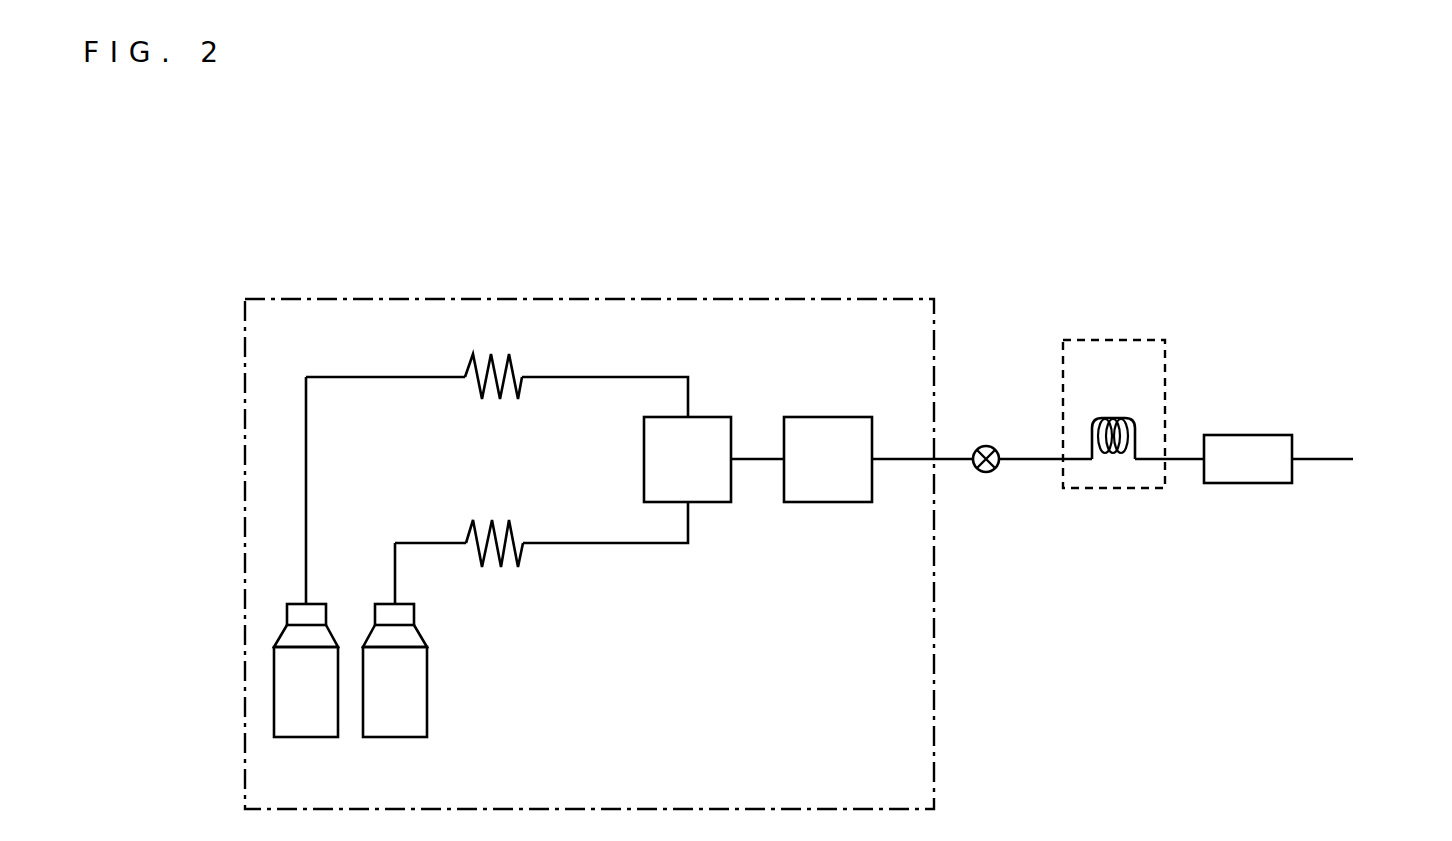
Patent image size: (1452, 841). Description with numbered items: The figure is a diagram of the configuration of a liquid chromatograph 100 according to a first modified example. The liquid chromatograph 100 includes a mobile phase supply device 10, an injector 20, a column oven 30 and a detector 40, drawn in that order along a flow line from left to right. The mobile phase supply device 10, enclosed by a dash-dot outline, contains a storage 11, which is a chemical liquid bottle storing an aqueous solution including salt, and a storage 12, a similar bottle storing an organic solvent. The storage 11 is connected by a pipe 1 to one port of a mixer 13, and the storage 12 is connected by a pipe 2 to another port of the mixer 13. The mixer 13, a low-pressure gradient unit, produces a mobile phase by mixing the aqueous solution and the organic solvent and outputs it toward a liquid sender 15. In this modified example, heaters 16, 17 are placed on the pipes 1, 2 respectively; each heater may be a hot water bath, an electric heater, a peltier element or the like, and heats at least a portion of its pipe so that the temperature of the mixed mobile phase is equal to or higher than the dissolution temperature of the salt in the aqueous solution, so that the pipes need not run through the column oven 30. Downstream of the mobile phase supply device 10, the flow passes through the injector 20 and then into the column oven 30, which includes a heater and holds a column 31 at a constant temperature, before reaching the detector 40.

The liquid chromatograph 100 is at (1451, 228).
The mobile phase supply device 10 is at (595, 299).
The storage 11 is at (308, 737).
The storage 12 is at (395, 737).
The heater 16 is at (490, 353).
The heater 17 is at (490, 520).
The pipe 1 is at (572, 377).
The pipe 2 is at (573, 543).
The mixer 13 is at (703, 417).
The liquid sender 15 is at (845, 417).
The injector 20 is at (985, 445).
The column oven 30 is at (1113, 340).
The column 31 is at (1112, 418).
The detector 40 is at (1247, 435).